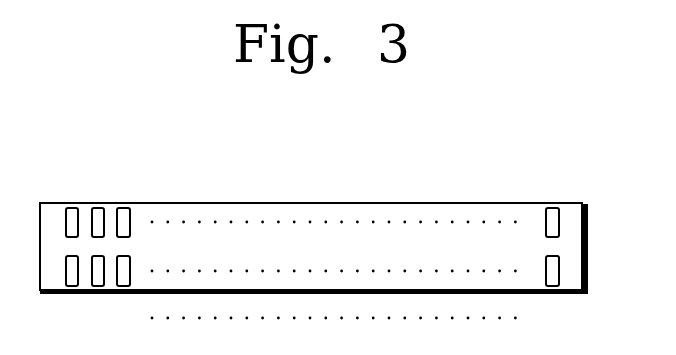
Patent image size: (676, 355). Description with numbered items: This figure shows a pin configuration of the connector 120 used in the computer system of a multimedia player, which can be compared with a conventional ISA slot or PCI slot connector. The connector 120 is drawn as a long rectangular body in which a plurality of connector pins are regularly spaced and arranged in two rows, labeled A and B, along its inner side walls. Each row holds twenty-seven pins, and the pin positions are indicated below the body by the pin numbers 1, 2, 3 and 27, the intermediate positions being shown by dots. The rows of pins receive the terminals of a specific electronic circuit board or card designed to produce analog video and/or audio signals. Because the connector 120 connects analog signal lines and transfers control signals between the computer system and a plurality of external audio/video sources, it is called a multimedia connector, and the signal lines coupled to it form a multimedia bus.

The connector 120 is at (233, 181).
The pin 1 is at (71, 272).
The pin 2 is at (97, 272).
The pin 3 is at (122, 272).
The pin 27 is at (551, 272).